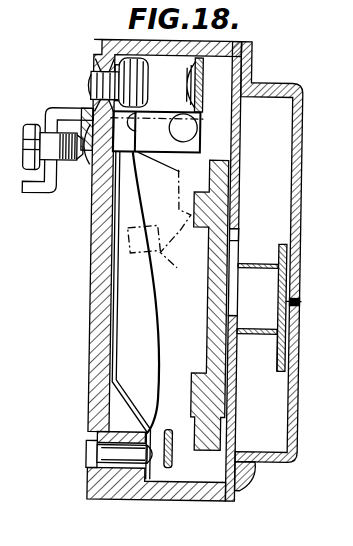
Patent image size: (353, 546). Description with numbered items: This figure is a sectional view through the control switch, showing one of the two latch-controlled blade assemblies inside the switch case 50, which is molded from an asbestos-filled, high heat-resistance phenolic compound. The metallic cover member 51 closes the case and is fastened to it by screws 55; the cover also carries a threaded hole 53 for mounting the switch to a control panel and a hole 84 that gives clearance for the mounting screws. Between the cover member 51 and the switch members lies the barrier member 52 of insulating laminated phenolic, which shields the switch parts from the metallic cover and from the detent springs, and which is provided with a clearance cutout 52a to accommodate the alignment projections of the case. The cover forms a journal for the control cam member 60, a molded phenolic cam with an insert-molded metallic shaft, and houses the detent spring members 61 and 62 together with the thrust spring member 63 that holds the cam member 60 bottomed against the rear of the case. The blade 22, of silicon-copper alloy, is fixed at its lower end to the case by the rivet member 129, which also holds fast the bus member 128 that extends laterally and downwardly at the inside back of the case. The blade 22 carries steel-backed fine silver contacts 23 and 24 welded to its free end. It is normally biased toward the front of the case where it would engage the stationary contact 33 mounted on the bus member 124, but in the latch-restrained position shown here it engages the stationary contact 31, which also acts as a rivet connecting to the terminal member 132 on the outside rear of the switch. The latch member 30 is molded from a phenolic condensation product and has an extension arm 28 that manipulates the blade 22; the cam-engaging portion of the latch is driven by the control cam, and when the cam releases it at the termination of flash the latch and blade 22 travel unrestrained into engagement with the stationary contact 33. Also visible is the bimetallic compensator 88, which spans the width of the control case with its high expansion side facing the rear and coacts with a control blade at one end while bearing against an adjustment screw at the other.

The blade 22 is at (164, 348).
The contact 23 is at (134, 125).
The contact 24 is at (146, 84).
The extension arm 28 is at (160, 224).
The latch member 30 is at (180, 172).
The stationary contact 31 is at (91, 72).
The stationary contact 33 is at (178, 116).
The switch case 50 is at (90, 292).
The cover member 51 is at (302, 127).
The barrier member 52 is at (240, 129).
The clearance cutout 52a is at (232, 227).
The threaded hole 53 is at (302, 300).
The screw 55 is at (257, 487).
The control cam member 60 is at (228, 172).
The detent spring member 61 is at (253, 262).
The detent spring member 62 is at (268, 334).
The thrust spring member 63 is at (279, 282).
The hole 84 is at (279, 300).
The compensator 88 is at (176, 455).
The bus member 124 is at (201, 80).
The bus member 128 is at (117, 345).
The rivet member 129 is at (125, 465).
The terminal member 132 is at (38, 196).